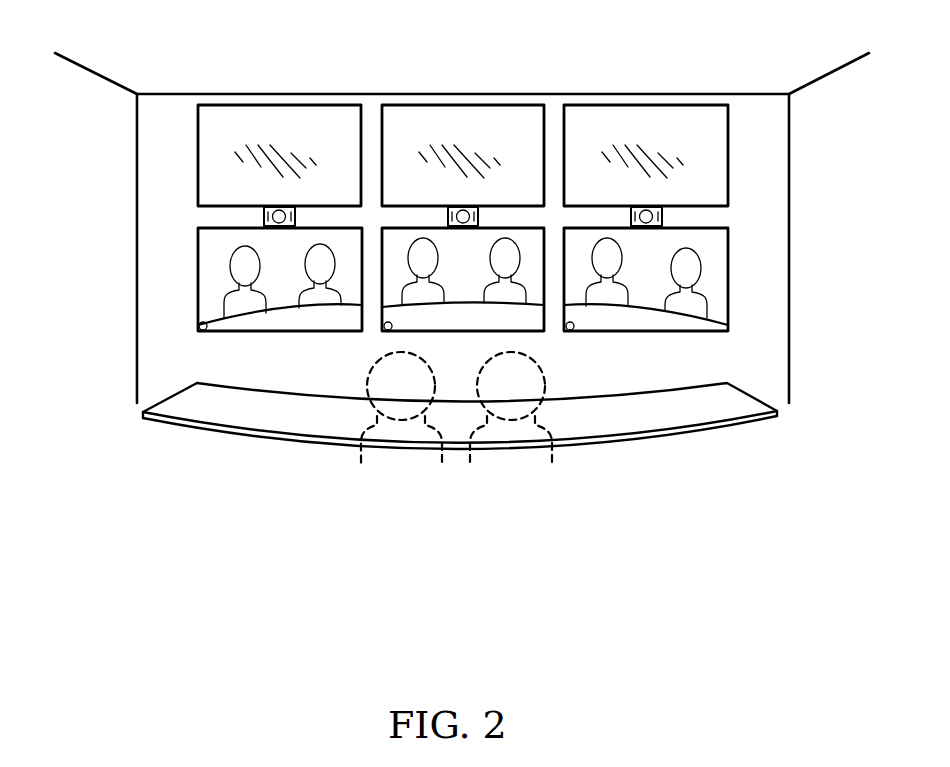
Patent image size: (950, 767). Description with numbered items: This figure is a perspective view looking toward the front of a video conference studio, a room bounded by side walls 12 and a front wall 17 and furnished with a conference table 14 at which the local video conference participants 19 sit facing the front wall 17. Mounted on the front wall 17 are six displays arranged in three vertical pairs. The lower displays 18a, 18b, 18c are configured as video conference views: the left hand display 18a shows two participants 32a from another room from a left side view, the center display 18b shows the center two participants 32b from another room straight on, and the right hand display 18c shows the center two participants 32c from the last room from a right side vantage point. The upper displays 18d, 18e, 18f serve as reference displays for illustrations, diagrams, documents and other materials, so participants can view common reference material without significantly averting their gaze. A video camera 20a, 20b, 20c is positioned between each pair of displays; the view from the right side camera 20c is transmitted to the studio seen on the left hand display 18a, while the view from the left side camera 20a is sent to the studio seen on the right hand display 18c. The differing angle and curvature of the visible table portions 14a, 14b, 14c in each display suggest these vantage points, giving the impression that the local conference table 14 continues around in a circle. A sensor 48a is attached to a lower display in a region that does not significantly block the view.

The side wall 12 is at (95, 178).
The conference table 14 is at (318, 423).
The visible portion of conference table 14a is at (250, 325).
The visible portion of conference table 14b is at (523, 320).
The visible portion of conference table 14c is at (643, 327).
The front wall 17 is at (753, 140).
The left hand display 18a is at (193, 284).
The center display 18b is at (463, 207).
The right hand display 18c is at (729, 292).
The upper display 18d is at (287, 122).
The upper display 18e is at (407, 130).
The upper display 18f is at (643, 125).
The video conference participants 19 is at (397, 410).
The left side camera 20a is at (264, 213).
The video camera 20b is at (463, 212).
The right side camera 20c is at (663, 220).
The conference participants 32a is at (315, 255).
The conference participants 32b is at (507, 267).
The conference participants 32c is at (690, 265).
The sensor 48a is at (199, 326).